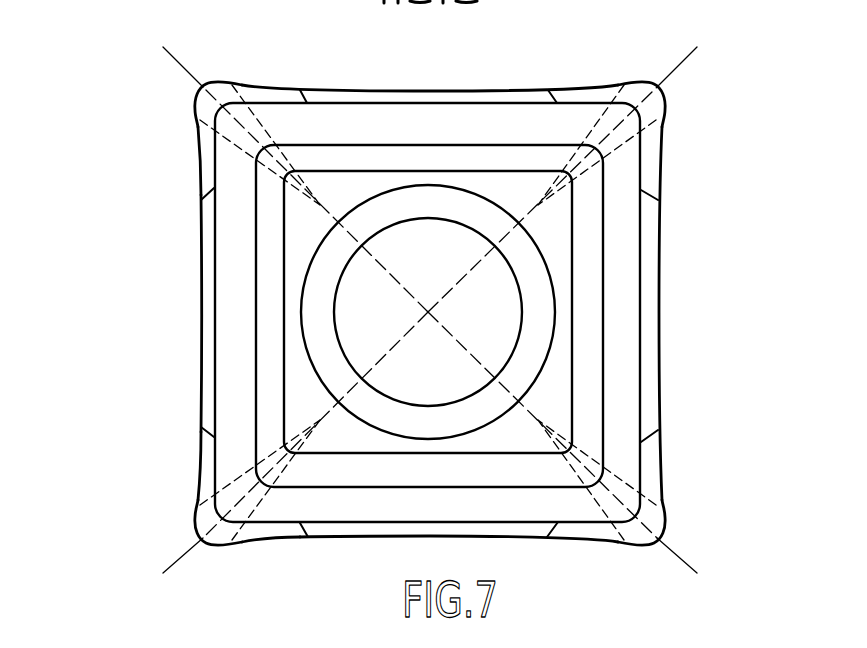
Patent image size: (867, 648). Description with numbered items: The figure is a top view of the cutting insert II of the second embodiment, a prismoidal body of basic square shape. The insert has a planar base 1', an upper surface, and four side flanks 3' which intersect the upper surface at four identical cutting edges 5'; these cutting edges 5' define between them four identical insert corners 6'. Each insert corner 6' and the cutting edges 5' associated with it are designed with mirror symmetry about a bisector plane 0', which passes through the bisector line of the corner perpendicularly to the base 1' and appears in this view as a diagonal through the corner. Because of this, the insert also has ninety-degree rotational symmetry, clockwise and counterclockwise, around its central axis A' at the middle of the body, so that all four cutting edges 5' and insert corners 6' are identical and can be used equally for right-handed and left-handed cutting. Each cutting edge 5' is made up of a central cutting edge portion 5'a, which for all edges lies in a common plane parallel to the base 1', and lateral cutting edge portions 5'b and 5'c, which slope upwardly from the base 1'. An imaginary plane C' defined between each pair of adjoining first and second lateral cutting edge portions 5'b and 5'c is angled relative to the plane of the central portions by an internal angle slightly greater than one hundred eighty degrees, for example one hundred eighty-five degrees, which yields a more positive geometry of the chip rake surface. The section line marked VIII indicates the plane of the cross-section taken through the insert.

The bisector plane 0' is at (427, 286).
The planar base 1' is at (428, 271).
The side flanks 3' is at (365, 312).
The cutting edges 5' is at (436, 308).
The central cutting edge portions 5'a is at (161, 313).
The first lateral cutting edge portions 5'b is at (229, 359).
The second lateral cutting edge portions 5'c is at (159, 464).
The insert corners 6' is at (424, 303).
The central axis A' is at (398, 297).
The imaginary plane C' is at (597, 499).
The cutting insert II is at (680, 184).
The section line VIII is at (162, 312).